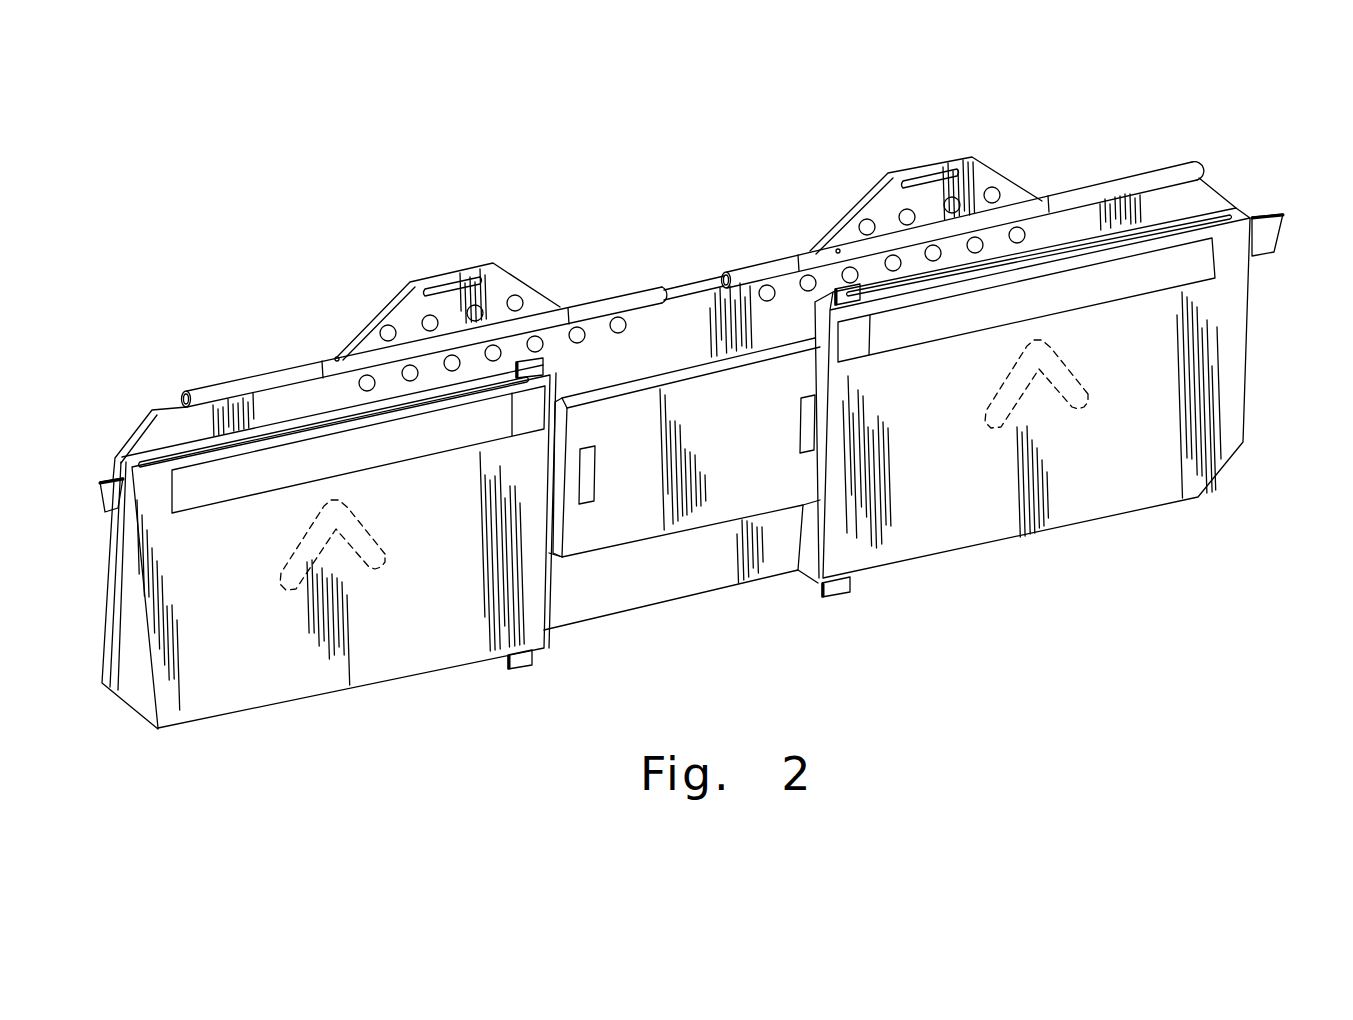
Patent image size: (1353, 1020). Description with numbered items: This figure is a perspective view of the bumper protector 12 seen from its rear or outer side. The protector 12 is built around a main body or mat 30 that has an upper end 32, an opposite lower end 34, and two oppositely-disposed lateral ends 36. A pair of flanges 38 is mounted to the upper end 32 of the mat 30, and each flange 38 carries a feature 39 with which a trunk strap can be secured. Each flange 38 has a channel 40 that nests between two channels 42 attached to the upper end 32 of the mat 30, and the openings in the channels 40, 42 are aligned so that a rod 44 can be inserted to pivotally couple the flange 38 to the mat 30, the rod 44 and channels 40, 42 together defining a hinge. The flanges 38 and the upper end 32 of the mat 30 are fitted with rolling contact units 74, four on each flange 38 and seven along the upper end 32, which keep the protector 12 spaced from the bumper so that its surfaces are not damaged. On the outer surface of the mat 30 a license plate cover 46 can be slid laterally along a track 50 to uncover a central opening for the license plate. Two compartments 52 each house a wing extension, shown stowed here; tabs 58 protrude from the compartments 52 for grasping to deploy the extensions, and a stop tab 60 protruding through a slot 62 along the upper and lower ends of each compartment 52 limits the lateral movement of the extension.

The bumper protector 12 is at (298, 159).
The mat 30 is at (690, 575).
The upper end 32 is at (672, 290).
The lower end 34 is at (575, 623).
The lateral ends 36 is at (102, 633).
The flanges 38 is at (363, 338).
The feature 39 is at (458, 283).
The channel 40 is at (337, 358).
The channels 42 is at (207, 390).
The rod 44 is at (180, 396).
The license plate cover 46 is at (605, 533).
The track 50 is at (650, 380).
The compartments 52 is at (392, 660).
The tabs 58 is at (100, 475).
The stop tab 60 is at (542, 360).
The slot 62 is at (360, 413).
The rolling contact units 74 is at (535, 340).